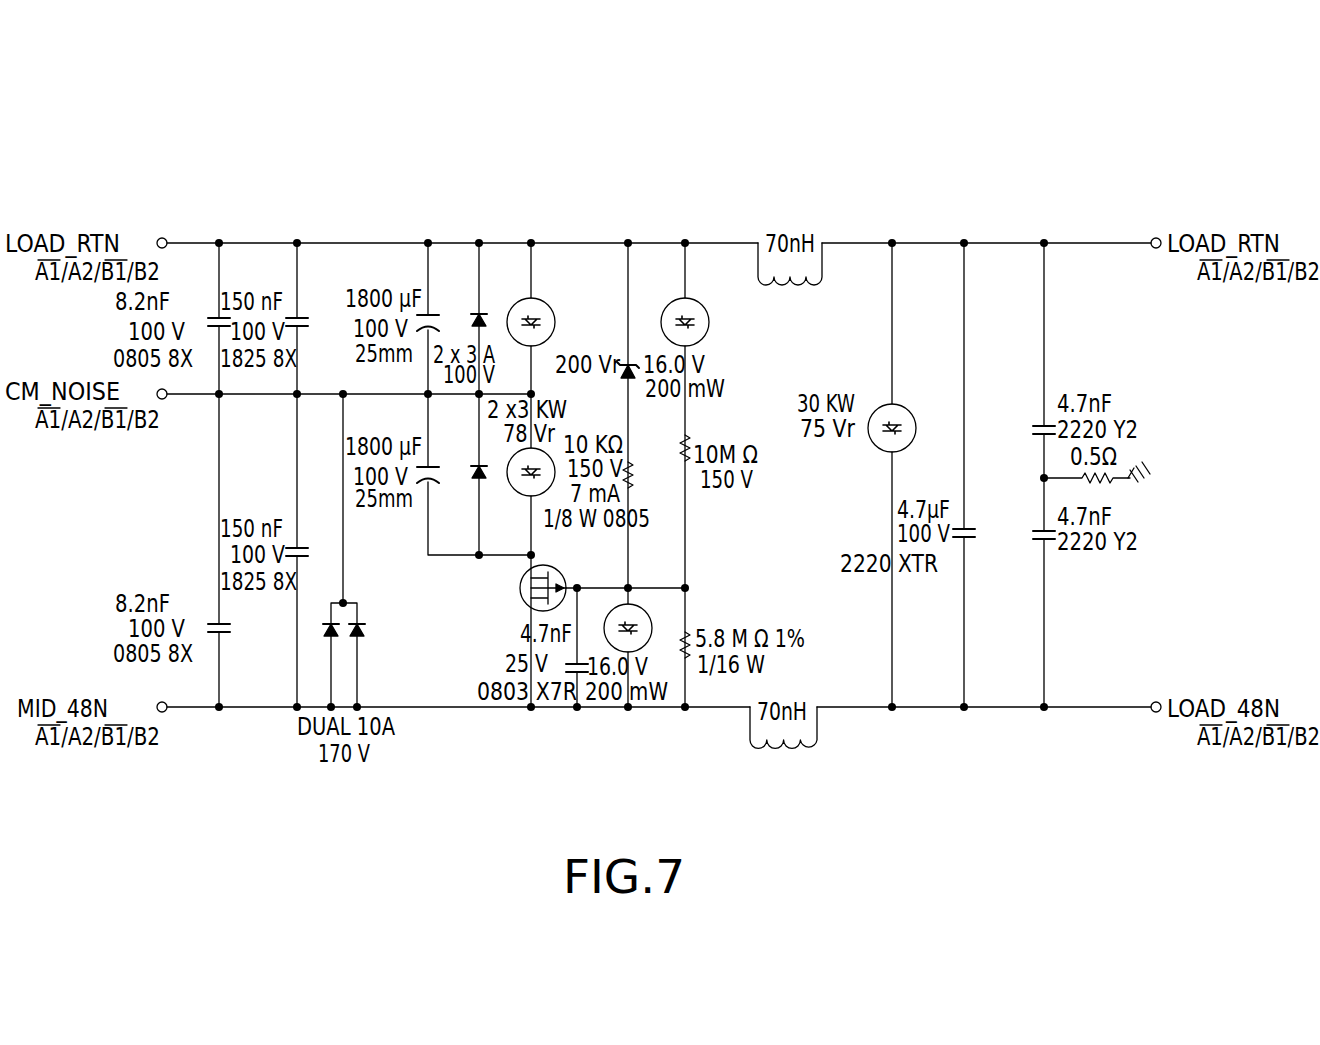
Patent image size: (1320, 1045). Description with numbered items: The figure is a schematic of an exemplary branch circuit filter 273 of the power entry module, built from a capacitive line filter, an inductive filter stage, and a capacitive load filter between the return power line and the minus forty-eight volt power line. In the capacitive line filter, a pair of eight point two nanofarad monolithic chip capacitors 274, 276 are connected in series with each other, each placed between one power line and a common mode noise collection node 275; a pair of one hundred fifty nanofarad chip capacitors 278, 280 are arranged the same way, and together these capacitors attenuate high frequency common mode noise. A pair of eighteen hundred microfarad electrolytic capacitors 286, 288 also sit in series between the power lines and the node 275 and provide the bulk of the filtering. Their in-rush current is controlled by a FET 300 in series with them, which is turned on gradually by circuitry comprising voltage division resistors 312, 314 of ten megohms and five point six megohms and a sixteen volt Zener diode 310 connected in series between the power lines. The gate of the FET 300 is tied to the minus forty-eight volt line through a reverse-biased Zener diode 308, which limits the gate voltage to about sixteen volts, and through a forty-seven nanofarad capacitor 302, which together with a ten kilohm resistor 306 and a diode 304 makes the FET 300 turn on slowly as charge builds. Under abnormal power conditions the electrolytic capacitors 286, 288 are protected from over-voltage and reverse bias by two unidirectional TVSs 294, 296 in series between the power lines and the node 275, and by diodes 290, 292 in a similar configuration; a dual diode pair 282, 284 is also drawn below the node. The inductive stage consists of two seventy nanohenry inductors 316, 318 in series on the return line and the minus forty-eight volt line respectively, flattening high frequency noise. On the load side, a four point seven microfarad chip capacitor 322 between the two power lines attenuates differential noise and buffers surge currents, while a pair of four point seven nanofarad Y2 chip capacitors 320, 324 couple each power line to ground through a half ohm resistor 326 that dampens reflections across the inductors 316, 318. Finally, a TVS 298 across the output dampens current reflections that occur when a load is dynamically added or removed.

The branch circuit filter 273 is at (1218, 168).
The 8.2 nF monolithic chip capacitor 274 is at (213, 308).
The common mode noise collection node 275 is at (210, 403).
The 8.2 nF monolithic chip capacitor 276 is at (212, 645).
The 150 nF monolithic chip capacitor 278 is at (305, 308).
The 150 nF monolithic chip capacitor 280 is at (285, 600).
The dual diode 282 is at (325, 645).
The dual diode 284 is at (368, 643).
The 1800 μF electrolytic capacitor 286 is at (415, 430).
The 1800 μF electrolytic capacitor 288 is at (414, 282).
The diode 290 is at (471, 310).
The diode 292 is at (473, 490).
The unidirectional TVS 294 is at (520, 297).
The unidirectional TVS 296 is at (512, 500).
The TVS 298 is at (910, 402).
The FET 300 is at (510, 598).
The 47 nF capacitor 302 is at (587, 713).
The diode 304 is at (622, 348).
The 10 kΩ resistor 306 is at (623, 430).
The Zener diode 308 is at (652, 650).
The 16 V Zener diode 310 is at (670, 292).
The voltage division resistor 312 is at (702, 492).
The voltage division resistor 314 is at (700, 672).
The 70 nH inductor 316 is at (797, 228).
The 70 nH inductor 318 is at (783, 752).
The 4.7 nF Y2 chip capacitor 320 is at (1078, 382).
The 4.7 μF monolithic chip capacitor 322 is at (953, 555).
The 4.7 nF Y2 chip capacitor 324 is at (1030, 555).
The 0.5 Ω resistor 326 is at (1115, 490).